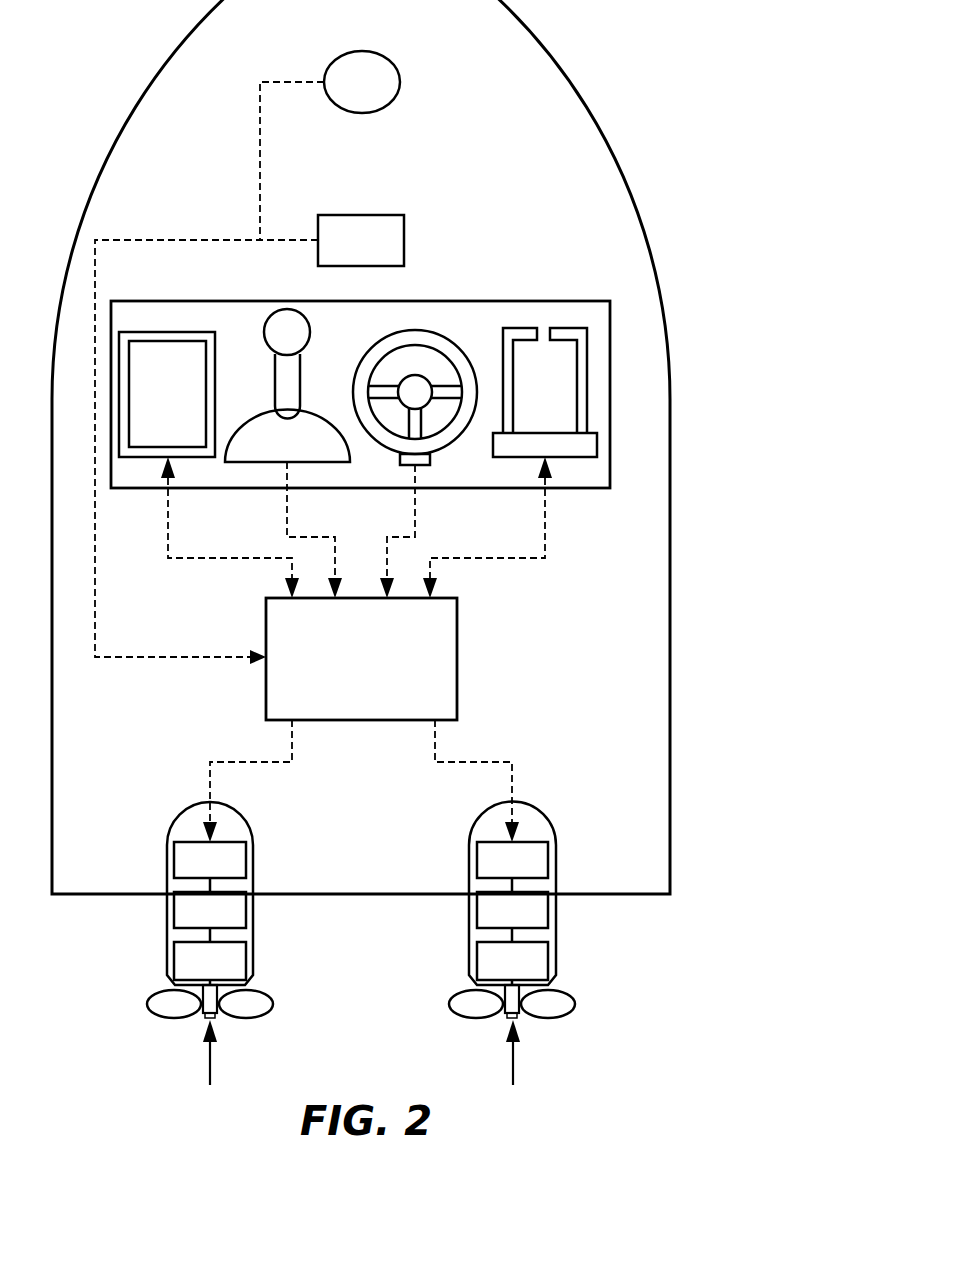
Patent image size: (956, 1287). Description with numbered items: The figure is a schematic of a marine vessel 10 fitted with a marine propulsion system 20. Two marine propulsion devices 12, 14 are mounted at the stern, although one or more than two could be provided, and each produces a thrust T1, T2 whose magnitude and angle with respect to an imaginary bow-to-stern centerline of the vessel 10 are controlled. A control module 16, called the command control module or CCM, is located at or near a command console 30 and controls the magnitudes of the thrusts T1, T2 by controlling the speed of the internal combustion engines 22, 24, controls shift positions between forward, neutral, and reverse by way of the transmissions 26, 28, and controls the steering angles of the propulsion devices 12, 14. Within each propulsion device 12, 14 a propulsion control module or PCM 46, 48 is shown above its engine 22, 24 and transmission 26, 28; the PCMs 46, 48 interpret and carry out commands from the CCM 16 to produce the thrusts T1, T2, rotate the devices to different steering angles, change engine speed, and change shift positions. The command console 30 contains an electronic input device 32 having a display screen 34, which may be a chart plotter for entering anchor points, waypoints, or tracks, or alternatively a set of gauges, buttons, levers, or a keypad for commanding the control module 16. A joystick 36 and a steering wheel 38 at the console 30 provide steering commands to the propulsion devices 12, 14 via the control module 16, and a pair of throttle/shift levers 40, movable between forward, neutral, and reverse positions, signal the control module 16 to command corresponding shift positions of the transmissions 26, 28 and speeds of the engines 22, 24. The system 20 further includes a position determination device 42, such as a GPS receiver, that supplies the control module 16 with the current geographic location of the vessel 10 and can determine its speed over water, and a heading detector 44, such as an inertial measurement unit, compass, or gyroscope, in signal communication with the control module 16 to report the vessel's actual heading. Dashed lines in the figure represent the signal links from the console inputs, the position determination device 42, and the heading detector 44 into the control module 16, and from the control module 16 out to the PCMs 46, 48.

The marine vessel 10 is at (578, 80).
The marine propulsion device 12 is at (212, 910).
The marine propulsion device 14 is at (510, 910).
The control module 16 is at (457, 666).
The marine propulsion system 20 is at (396, 720).
The internal combustion engine 22 is at (172, 908).
The internal combustion engine 24 is at (550, 906).
The transmission 26 is at (172, 958).
The transmission 28 is at (550, 958).
The command console 30 is at (512, 300).
The electronic input device 32 is at (191, 355).
The display screen 34 is at (213, 404).
The joystick 36 is at (300, 380).
The steering wheel 38 is at (438, 345).
The throttle/shift levers 40 is at (603, 356).
The position determination device 42 is at (393, 61).
The heading detector 44 is at (387, 215).
The propulsion control module 46 is at (172, 863).
The propulsion control module 48 is at (550, 863).
The thrust T1 is at (210, 1055).
The thrust T2 is at (513, 1053).